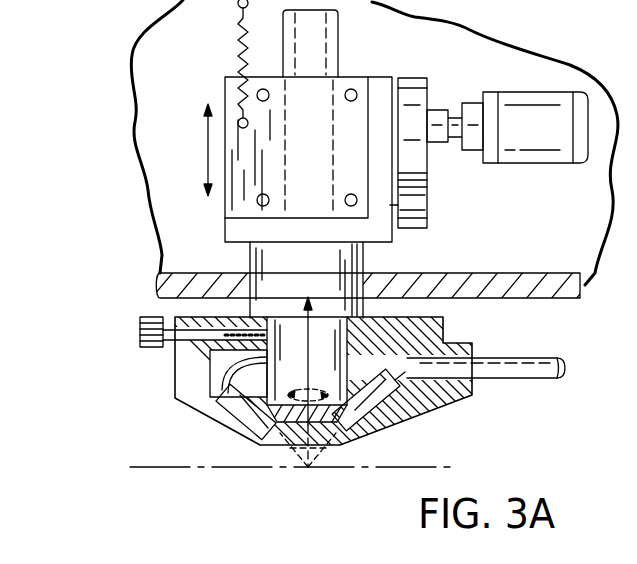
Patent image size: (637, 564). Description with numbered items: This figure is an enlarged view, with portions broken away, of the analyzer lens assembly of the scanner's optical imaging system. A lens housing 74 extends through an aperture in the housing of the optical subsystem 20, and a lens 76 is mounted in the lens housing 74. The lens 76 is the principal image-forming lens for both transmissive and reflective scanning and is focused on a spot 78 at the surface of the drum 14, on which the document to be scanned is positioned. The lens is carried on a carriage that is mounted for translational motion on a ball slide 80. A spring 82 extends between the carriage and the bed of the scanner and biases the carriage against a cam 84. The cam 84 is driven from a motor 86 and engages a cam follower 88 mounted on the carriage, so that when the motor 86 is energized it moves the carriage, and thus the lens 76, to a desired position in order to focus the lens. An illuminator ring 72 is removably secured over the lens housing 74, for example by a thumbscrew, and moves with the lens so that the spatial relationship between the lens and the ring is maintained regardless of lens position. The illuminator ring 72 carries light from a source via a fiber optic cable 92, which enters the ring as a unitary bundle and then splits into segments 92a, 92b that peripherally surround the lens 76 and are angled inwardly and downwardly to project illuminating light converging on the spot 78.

The drum 14 is at (162, 466).
The optical subsystem 20 is at (133, 122).
The illuminator ring 72 is at (407, 430).
The lens housing 74 is at (265, 263).
The lens 76 is at (307, 371).
The spot 78 is at (392, 238).
The ball slide 80 is at (340, 38).
The spring 82 is at (240, 52).
The cam 84 is at (430, 77).
The motor 86 is at (515, 105).
The cam follower 88 is at (425, 207).
The fiber optic cable 92 is at (514, 358).
The fiber optic cable segment 92a is at (245, 380).
The fiber optic cable segment 92b is at (433, 412).